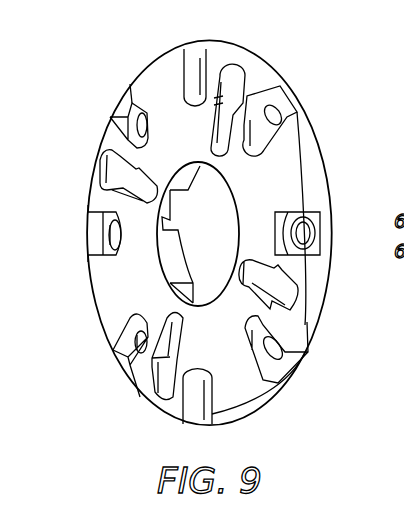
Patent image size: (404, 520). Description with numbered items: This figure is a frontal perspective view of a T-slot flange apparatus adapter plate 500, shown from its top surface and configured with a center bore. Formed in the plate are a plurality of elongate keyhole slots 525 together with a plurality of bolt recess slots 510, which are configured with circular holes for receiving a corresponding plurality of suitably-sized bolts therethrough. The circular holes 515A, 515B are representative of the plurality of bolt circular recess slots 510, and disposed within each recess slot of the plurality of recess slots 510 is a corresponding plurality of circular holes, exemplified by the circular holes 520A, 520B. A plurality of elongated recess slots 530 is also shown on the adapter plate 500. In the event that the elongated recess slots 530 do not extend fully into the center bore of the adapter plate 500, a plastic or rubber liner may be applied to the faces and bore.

The T-slot flange apparatus adapter plate 500 is at (308, 87).
The bolt recess slots 510 is at (300, 212).
The circular hole 515A is at (96, 233).
The circular hole 515B is at (132, 102).
The circular hole 520A is at (115, 237).
The circular hole 520B is at (140, 123).
The elongate keyhole slots 525 is at (147, 400).
The elongated recess slots 530 is at (258, 62).